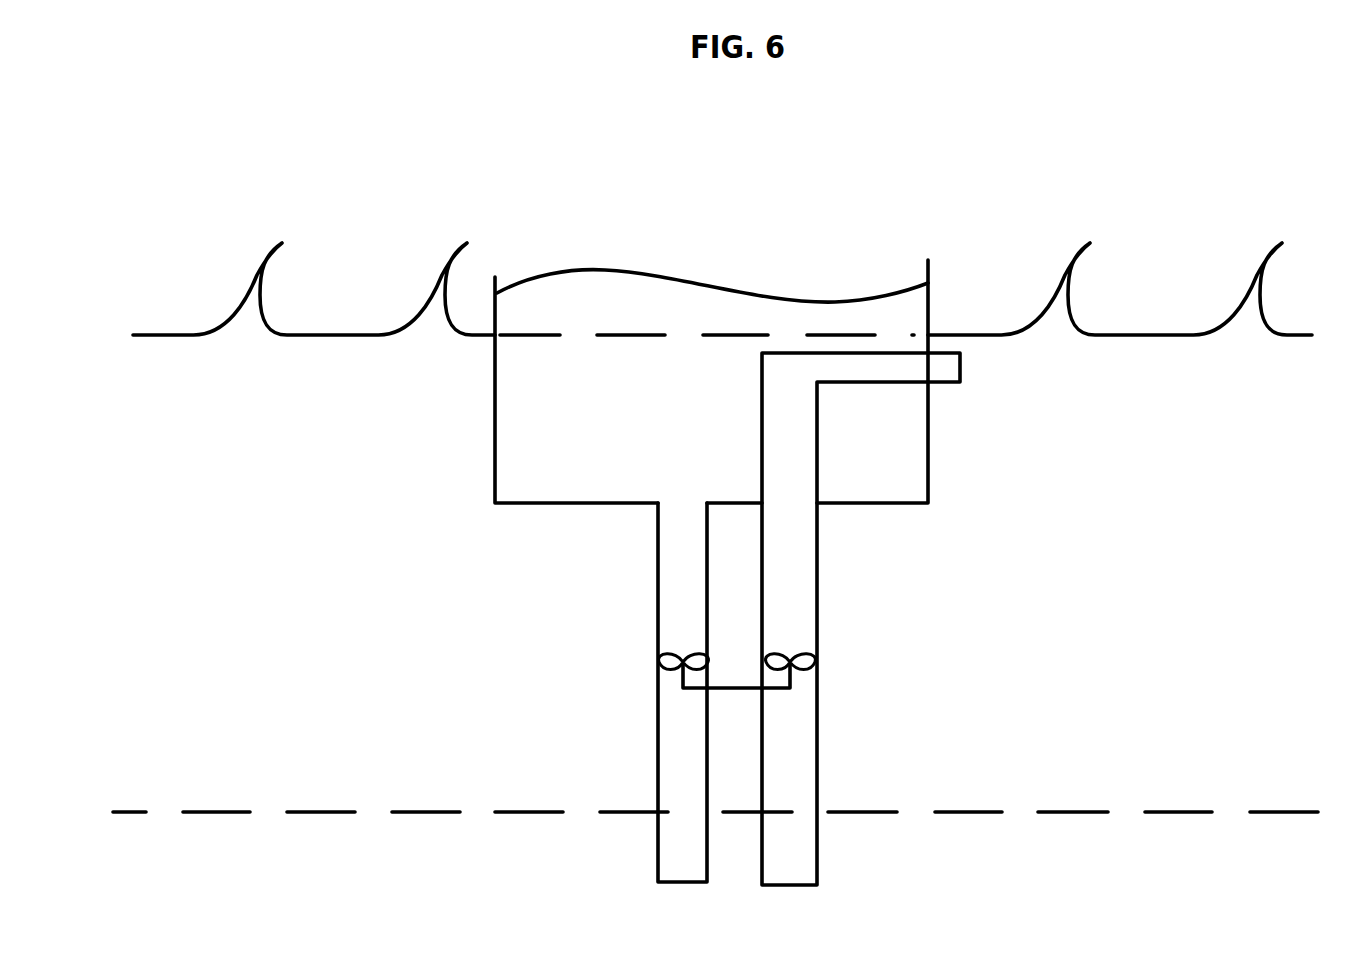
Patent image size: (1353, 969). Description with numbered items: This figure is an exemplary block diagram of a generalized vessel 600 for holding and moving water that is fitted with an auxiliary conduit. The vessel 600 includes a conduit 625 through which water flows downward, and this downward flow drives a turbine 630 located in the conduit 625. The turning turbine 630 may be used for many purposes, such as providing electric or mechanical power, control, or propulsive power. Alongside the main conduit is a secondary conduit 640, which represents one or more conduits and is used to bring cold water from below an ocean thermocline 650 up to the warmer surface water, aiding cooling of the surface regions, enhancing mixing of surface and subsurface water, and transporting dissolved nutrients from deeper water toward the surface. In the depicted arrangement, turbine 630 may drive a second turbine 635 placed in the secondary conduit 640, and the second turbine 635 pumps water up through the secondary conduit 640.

The vessel 600 is at (566, 207).
The conduit 625 is at (675, 749).
The turbine 630 is at (672, 657).
The second turbine 635 is at (852, 667).
The secondary conduit 640 is at (807, 610).
The ocean thermocline 650 is at (933, 813).